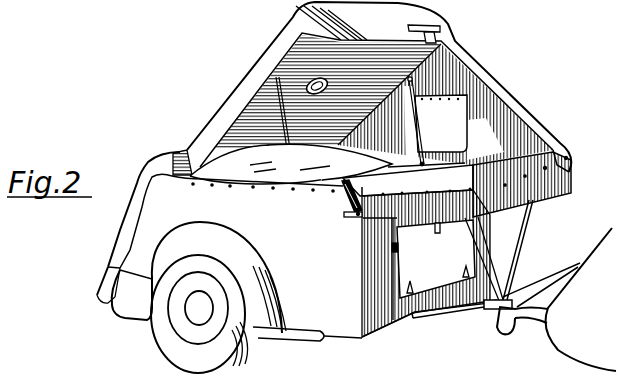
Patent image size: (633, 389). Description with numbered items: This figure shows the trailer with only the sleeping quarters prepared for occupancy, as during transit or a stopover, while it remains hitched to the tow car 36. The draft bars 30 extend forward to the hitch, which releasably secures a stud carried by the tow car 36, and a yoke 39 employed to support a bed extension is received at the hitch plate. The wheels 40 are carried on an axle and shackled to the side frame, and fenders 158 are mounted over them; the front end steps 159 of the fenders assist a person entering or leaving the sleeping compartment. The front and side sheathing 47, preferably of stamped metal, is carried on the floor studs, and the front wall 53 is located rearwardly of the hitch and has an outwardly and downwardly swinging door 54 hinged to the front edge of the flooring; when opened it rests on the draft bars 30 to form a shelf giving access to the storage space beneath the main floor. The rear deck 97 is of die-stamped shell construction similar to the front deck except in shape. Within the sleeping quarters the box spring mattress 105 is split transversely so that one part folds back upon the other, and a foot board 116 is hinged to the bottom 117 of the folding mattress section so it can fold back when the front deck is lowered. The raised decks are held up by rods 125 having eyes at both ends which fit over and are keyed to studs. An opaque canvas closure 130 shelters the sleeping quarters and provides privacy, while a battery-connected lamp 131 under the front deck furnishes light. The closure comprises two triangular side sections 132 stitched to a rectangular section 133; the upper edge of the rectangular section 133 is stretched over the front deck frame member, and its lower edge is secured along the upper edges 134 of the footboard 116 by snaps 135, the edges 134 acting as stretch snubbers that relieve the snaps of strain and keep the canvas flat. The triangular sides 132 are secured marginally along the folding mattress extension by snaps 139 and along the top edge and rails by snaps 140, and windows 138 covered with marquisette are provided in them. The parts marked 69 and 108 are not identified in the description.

The draft bars 30 is at (437, 320).
The tow car 36 is at (546, 338).
The yoke 39 is at (525, 237).
The wheels 40 is at (177, 353).
The front and side sheathing 47 is at (332, 295).
The front wall 53 is at (395, 317).
The door 54 is at (433, 259).
The lid 69 is at (247, 73).
The rear deck 97 is at (124, 223).
The box spring mattress 105 is at (364, 190).
The hinge bracket 108 is at (337, 191).
The foot board 116 is at (543, 183).
The bottom of the mattress section 117 is at (357, 216).
The rods 125 is at (290, 160).
The opaque canvas closure 130 is at (549, 118).
The lamp 131 is at (310, 80).
The triangular side sections 132 is at (493, 137).
The rectangular section 133 is at (484, 76).
The upper edges of the footboard 134 is at (560, 151).
The snaps 135 is at (568, 158).
The windows 138 is at (456, 113).
The snaps 139 is at (396, 199).
The snaps 140 is at (313, 190).
The fenders 158 is at (122, 287).
The steps 159 is at (293, 341).